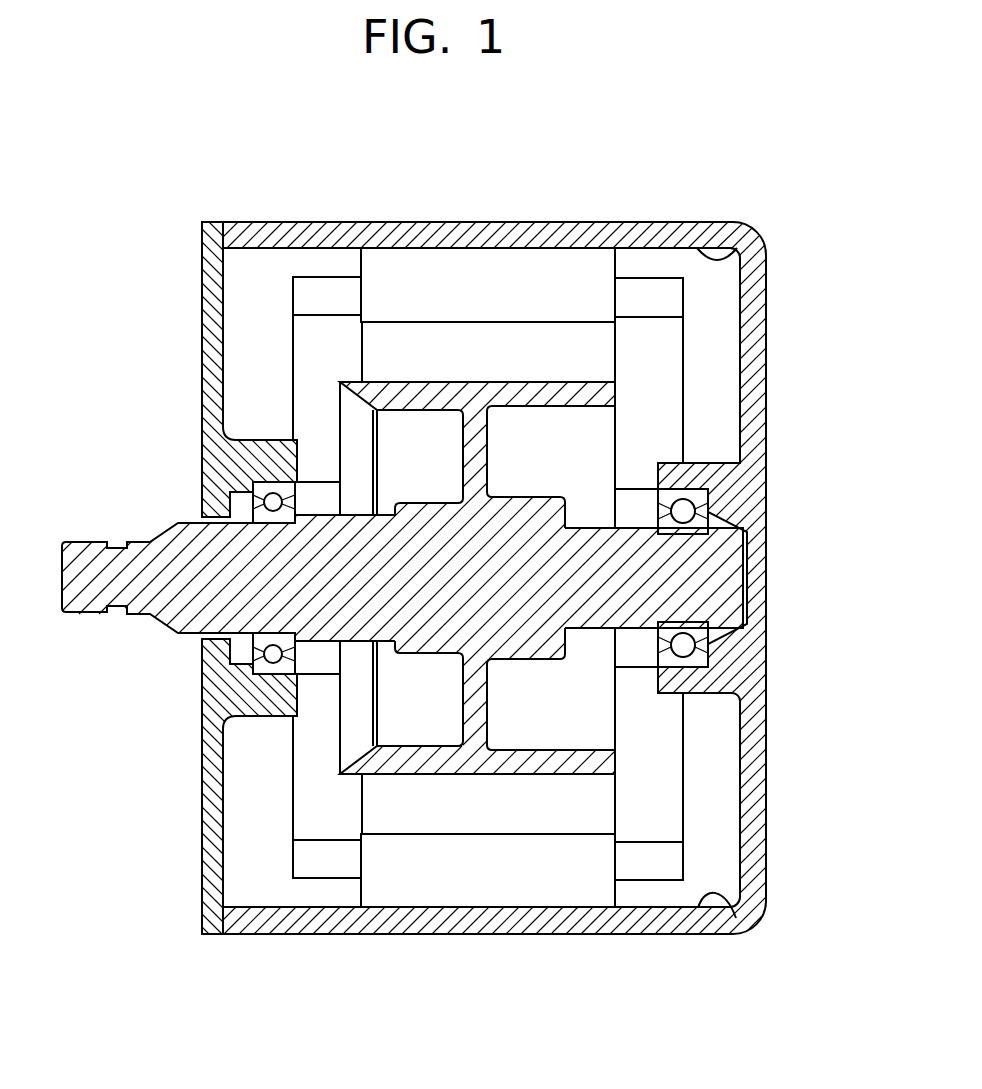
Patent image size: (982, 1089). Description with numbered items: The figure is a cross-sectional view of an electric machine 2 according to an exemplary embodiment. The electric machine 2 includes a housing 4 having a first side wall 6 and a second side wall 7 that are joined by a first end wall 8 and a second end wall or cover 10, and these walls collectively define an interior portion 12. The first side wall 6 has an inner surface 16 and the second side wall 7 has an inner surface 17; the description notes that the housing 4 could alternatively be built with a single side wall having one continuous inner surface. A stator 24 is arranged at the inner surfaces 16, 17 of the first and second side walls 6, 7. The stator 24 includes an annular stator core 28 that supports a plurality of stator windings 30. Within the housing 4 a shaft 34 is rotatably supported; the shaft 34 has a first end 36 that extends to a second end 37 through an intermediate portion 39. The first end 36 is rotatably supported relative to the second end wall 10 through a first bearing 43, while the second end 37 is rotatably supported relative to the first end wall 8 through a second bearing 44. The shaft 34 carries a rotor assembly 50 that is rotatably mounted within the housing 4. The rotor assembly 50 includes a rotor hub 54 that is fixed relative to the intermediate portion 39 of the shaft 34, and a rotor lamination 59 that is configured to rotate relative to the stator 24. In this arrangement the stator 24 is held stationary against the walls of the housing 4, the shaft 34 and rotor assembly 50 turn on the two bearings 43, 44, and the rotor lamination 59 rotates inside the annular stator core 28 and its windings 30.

The electric machine 2 is at (138, 125).
The housing 4 is at (358, 222).
The first side wall 6 is at (480, 223).
The second side wall 7 is at (590, 935).
The first end wall 8 is at (767, 742).
The second end wall or cover 10 is at (203, 811).
The interior portion 12 is at (240, 882).
The inner surface 16 is at (752, 227).
The inner surface 17 is at (736, 918).
The stator 24 is at (491, 298).
The annular stator core 28 is at (537, 283).
The stator windings 30 is at (267, 282).
The shaft 34 is at (105, 500).
The first end 36 is at (176, 627).
The second end 37 is at (732, 582).
The intermediate portion 39 is at (530, 603).
The first bearing 43 is at (266, 499).
The second bearing 44 is at (684, 511).
The rotor assembly 50 is at (588, 723).
The rotor hub 54 is at (486, 443).
The rotor lamination 59 is at (496, 367).